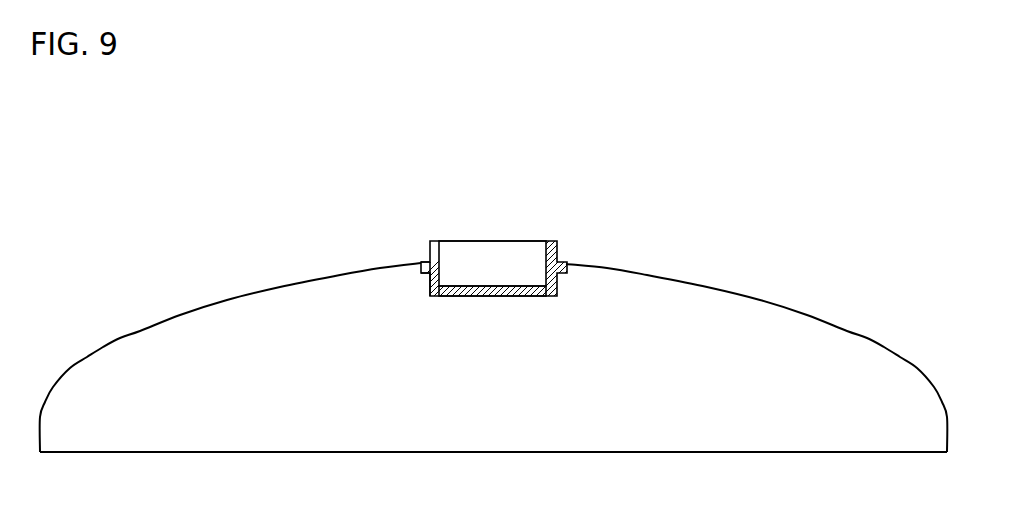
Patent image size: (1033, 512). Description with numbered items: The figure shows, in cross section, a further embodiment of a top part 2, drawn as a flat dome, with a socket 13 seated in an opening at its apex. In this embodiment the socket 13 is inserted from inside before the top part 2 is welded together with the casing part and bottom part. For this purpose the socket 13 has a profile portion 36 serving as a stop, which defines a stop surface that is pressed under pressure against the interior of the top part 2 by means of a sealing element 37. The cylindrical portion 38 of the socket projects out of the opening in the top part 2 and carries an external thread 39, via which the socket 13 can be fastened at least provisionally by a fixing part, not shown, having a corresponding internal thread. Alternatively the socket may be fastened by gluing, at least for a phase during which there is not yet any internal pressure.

The top part 2 is at (228, 299).
The socket 13 is at (505, 250).
The profile portion 36 is at (428, 273).
The sealing element 37 is at (422, 264).
The cylindrical portion 38 is at (557, 297).
The external thread 39 is at (423, 247).